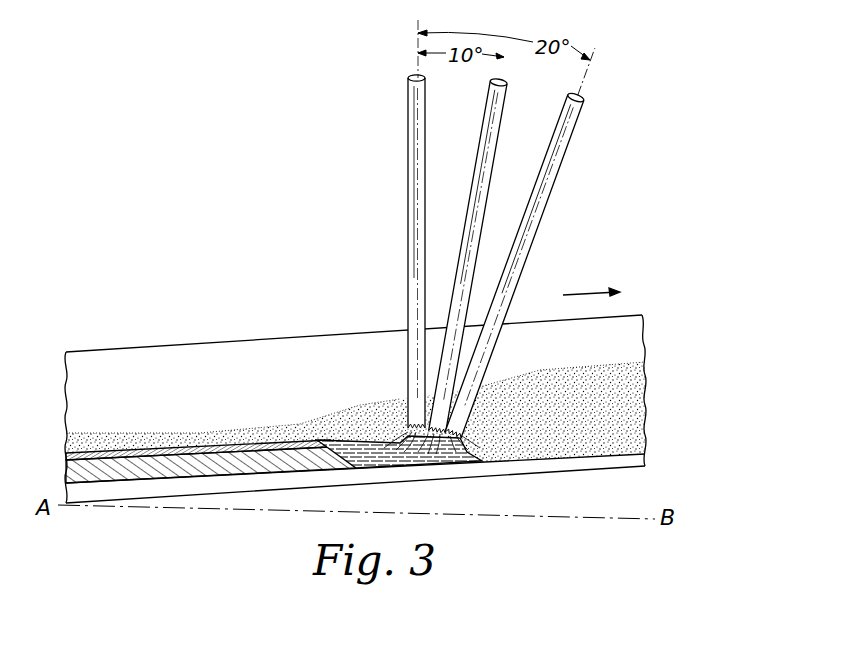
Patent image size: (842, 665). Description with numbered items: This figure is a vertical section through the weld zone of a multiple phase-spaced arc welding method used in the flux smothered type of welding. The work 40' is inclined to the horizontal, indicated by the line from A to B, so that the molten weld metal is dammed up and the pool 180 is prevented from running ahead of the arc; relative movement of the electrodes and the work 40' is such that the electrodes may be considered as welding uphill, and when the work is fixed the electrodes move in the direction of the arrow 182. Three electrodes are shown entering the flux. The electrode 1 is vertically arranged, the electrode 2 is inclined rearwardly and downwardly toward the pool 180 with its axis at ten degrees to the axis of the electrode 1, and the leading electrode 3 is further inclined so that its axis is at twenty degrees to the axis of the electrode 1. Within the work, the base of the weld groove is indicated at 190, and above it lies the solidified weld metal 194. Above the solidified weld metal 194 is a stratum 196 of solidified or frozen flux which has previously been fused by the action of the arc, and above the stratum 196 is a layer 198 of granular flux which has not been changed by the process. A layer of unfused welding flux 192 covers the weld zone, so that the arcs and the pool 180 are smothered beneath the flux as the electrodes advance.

The electrode 1 is at (407, 231).
The electrode 2 is at (465, 229).
The leading electrode 3 is at (519, 229).
The work 40' is at (391, 409).
The pool 180 is at (397, 465).
The arrow 182 is at (583, 293).
The base of the weld groove 190 is at (283, 482).
The layer of unfused welding flux 192 is at (618, 402).
The solidified weld metal 194 is at (175, 470).
The stratum of solidified flux 196 is at (92, 455).
The layer of granular flux 198 is at (118, 437).